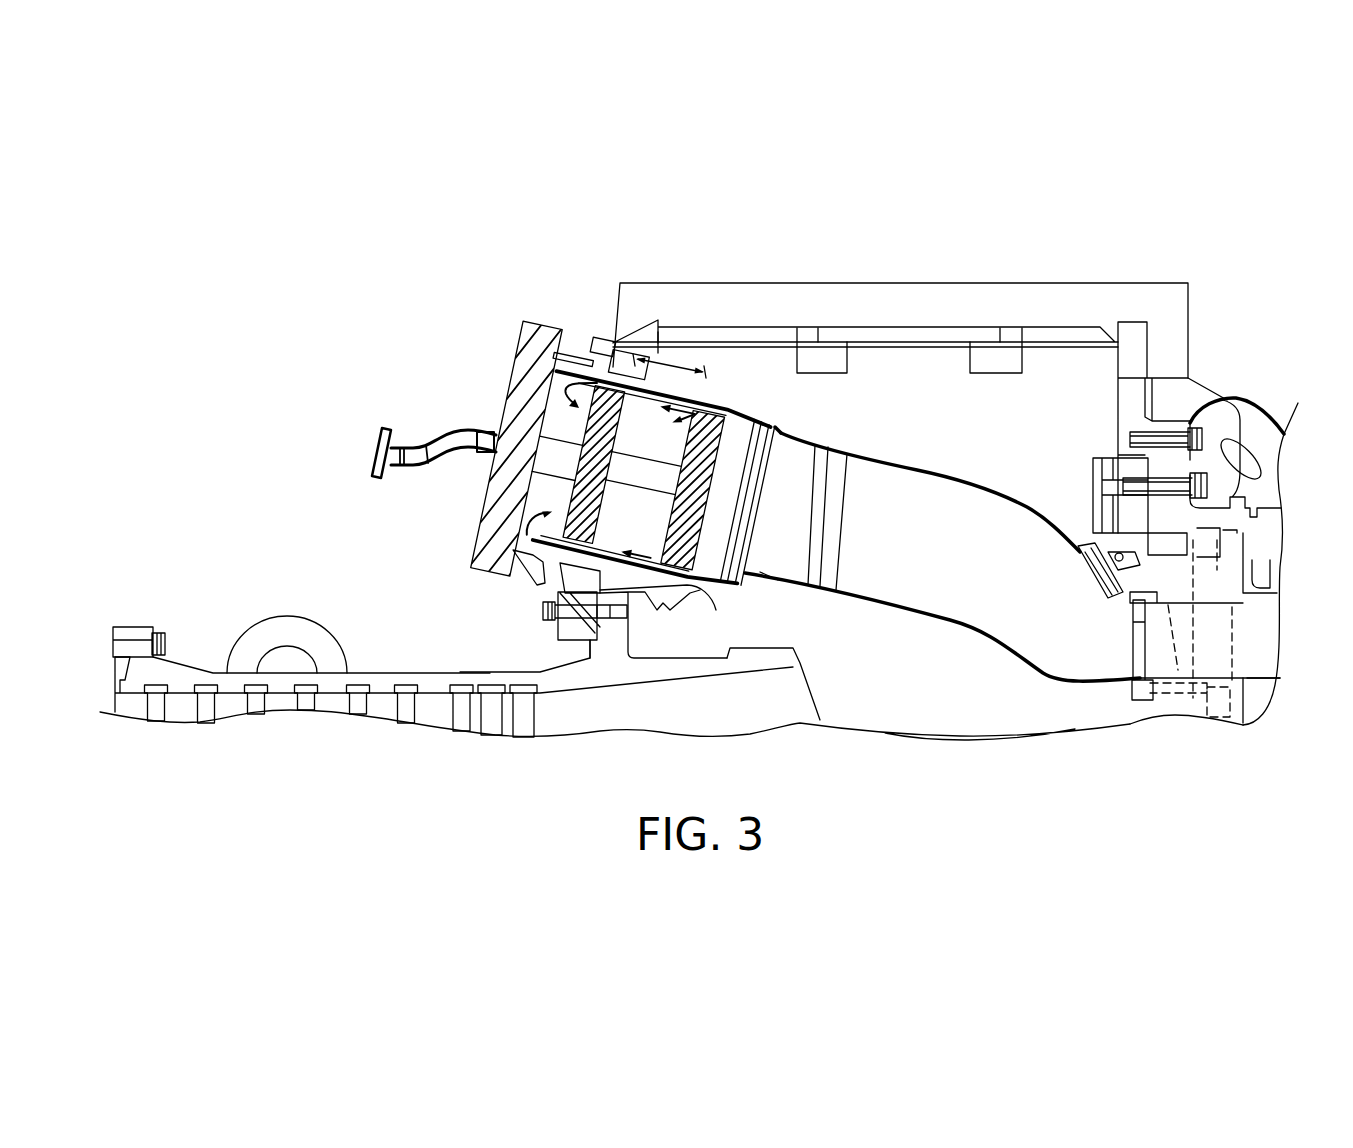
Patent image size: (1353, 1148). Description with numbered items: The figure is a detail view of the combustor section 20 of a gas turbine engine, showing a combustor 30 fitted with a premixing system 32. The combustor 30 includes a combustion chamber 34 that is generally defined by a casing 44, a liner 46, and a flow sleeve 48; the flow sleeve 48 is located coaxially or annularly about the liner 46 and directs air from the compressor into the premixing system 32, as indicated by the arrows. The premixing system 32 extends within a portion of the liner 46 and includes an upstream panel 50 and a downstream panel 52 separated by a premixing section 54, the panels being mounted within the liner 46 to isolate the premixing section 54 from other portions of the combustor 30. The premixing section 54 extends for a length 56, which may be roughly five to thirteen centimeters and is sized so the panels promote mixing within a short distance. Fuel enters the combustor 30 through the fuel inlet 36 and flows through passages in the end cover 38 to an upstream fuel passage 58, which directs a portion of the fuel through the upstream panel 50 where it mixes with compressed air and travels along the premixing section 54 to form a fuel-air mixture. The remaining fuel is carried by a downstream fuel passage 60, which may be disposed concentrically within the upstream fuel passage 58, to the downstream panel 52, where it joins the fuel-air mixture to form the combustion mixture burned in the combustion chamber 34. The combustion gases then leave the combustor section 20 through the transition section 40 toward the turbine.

The combustor section 20 is at (830, 225).
The combustor 30 is at (609, 466).
The premixing system 32 is at (620, 604).
The combustion chamber 34 is at (725, 498).
The fuel inlet 36 is at (412, 467).
The end cover 38 is at (531, 330).
The transition section 40 is at (1045, 660).
The casing 44 is at (566, 356).
The liner 46 is at (798, 588).
The flow sleeve 48 is at (671, 609).
The upstream panel 50 is at (604, 432).
The downstream panel 52 is at (737, 524).
The premixing section 54 is at (703, 420).
The length 56 is at (668, 355).
The upstream fuel passage 58 is at (550, 452).
The downstream fuel passage 60 is at (648, 488).